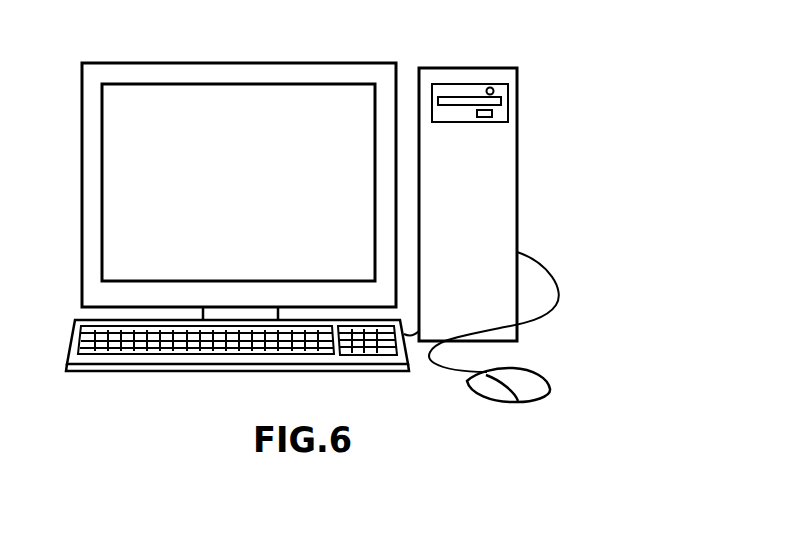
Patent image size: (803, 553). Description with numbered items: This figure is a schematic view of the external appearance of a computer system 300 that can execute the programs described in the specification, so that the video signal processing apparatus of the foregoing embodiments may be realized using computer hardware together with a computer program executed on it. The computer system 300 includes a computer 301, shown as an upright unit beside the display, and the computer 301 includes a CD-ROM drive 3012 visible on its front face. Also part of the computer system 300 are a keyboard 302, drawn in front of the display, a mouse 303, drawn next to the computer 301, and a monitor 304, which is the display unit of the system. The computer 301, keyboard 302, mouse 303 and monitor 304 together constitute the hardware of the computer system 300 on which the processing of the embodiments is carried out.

The computer system 300 is at (567, 47).
The computer 301 is at (458, 68).
The CD-ROM drive 3012 is at (508, 103).
The keyboard 302 is at (100, 371).
The mouse 303 is at (541, 368).
The monitor 304 is at (290, 63).